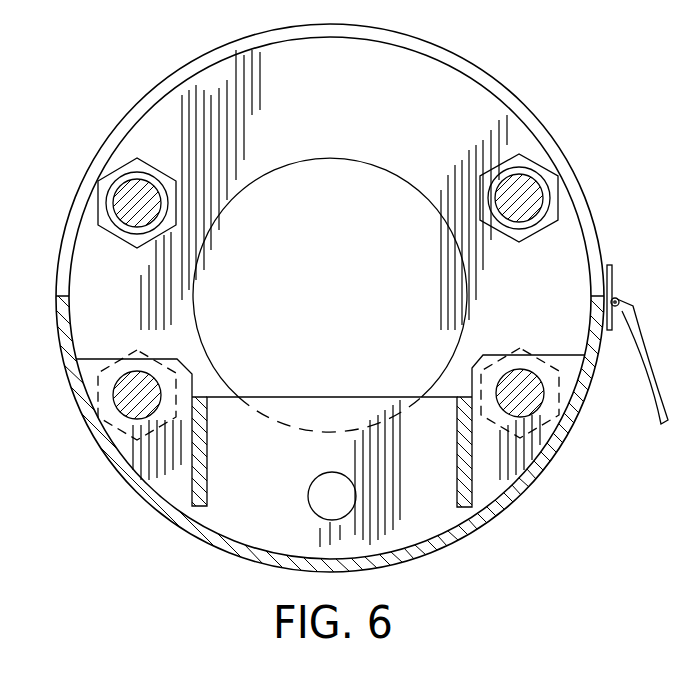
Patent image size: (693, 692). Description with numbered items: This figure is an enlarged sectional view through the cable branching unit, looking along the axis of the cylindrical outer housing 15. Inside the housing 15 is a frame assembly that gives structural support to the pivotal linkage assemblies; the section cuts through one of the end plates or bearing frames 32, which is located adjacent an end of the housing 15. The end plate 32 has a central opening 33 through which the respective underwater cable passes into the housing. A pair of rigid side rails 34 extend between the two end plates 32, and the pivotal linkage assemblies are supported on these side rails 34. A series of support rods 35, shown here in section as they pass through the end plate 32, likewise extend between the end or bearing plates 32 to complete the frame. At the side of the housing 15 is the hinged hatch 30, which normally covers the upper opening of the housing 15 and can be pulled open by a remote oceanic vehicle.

The cylindrical outer housing 15 is at (170, 508).
The hinged hatch 30 is at (645, 400).
The end plate 32 is at (441, 83).
The opening 33 is at (324, 160).
The side rail 34 is at (198, 435).
The support rod 35 is at (128, 192).